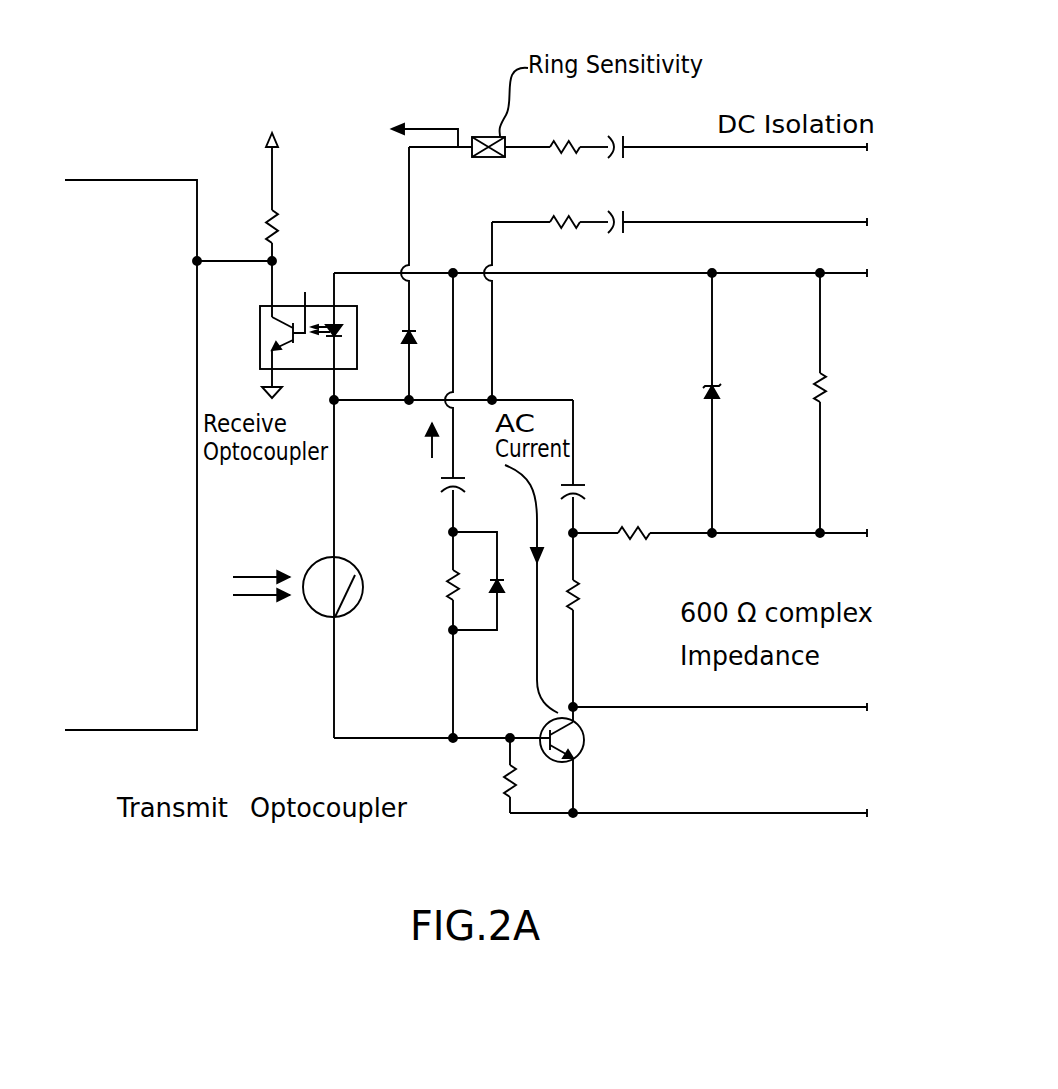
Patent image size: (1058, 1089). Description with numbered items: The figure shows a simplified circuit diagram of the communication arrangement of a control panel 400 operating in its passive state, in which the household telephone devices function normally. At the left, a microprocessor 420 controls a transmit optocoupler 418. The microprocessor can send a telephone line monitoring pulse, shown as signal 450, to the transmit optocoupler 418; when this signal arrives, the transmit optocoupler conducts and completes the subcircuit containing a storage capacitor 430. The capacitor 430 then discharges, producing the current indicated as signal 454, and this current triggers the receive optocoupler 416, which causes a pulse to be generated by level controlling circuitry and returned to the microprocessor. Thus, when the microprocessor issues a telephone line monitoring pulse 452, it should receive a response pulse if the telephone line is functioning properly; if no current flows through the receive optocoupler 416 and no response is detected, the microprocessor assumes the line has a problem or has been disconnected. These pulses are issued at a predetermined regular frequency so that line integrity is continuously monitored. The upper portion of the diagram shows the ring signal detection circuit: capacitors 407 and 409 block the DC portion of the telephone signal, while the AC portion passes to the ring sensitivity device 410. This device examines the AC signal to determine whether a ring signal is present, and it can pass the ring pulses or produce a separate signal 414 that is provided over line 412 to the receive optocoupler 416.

The control panel 400 is at (770, 58).
The capacitor 407 is at (625, 147).
The capacitor 409 is at (625, 222).
The ring sensitivity device 410 is at (478, 137).
The line 412 is at (409, 212).
The signal 414 is at (420, 129).
The receive optocoupler 416 is at (305, 282).
The transmit optocoupler 418 is at (305, 642).
The microprocessor 420 is at (112, 180).
The capacitor 430 is at (440, 490).
The signal 450 is at (255, 595).
The telephone line monitoring pulse 452 is at (255, 577).
The signal 454 is at (432, 445).